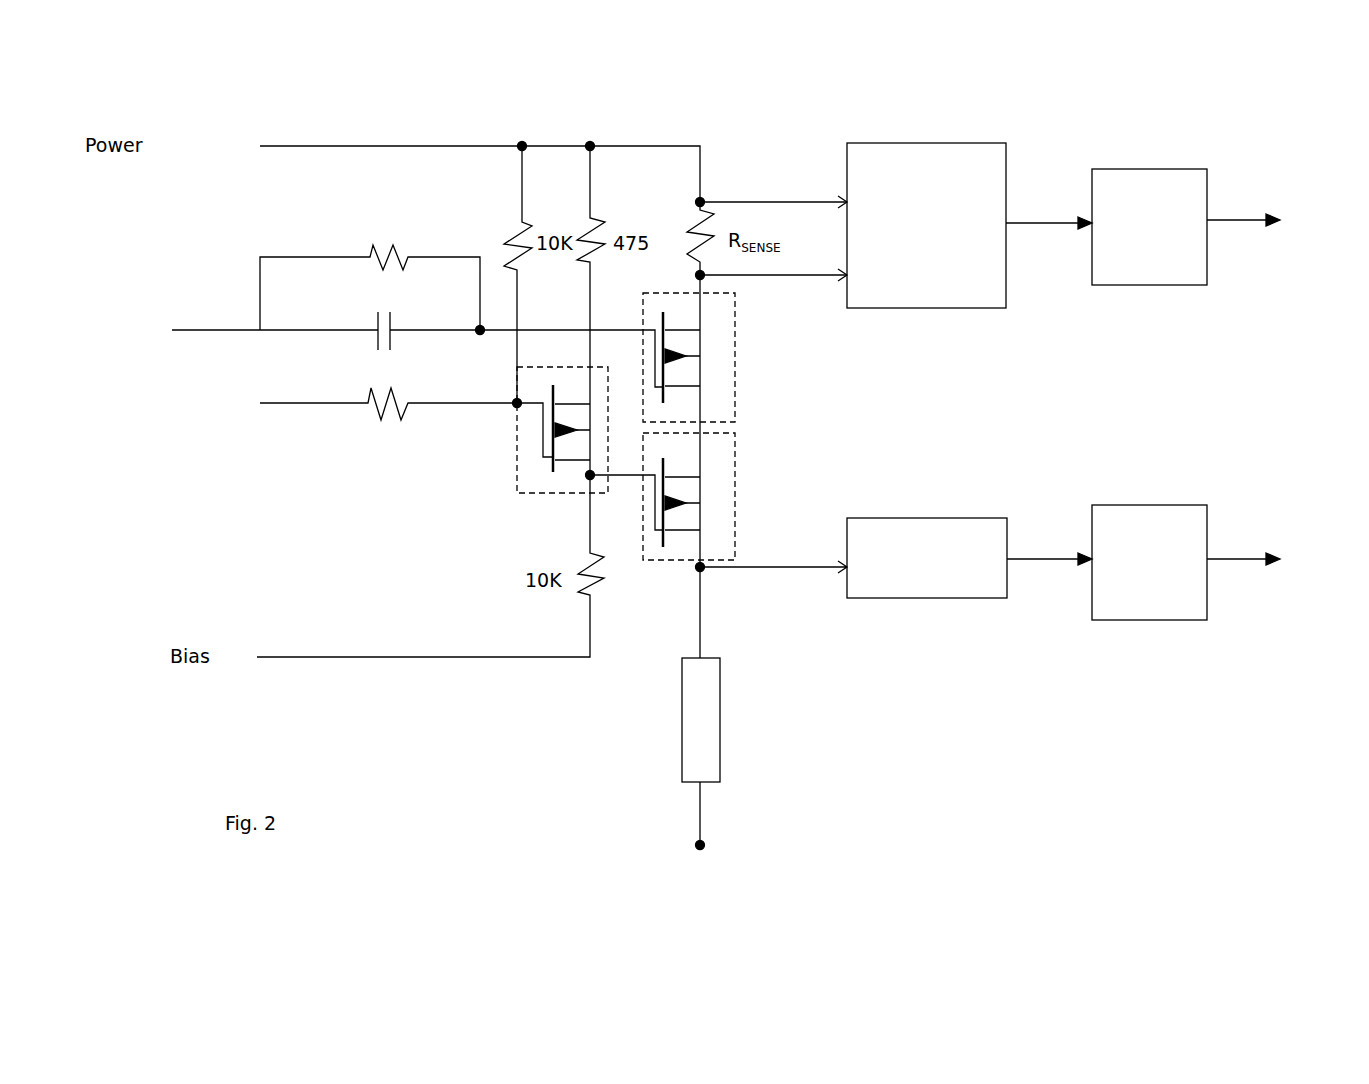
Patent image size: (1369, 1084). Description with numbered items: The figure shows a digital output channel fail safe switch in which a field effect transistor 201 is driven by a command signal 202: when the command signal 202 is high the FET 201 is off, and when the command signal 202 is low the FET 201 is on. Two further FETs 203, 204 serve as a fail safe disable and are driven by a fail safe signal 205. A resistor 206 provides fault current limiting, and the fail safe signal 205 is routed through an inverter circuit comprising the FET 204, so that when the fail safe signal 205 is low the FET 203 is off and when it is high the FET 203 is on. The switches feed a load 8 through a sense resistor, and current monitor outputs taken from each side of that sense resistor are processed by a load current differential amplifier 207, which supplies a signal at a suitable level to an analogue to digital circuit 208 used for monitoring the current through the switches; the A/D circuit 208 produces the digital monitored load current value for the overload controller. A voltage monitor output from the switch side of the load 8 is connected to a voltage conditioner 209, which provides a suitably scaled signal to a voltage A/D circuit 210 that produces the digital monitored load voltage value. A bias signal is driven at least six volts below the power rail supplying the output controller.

The load 8 is at (720, 733).
The field effect transistor 201 is at (737, 352).
The command signal 202 is at (350, 298).
The FET 203 is at (737, 482).
The FET 204 is at (597, 493).
The fail safe signal 205 is at (281, 418).
The resistor 206 is at (408, 415).
The load current differential amplifier 207 is at (927, 308).
The analogue to digital circuit 208 is at (1123, 285).
The voltage conditioner 209 is at (953, 598).
The voltage A/D circuit 210 is at (1157, 620).